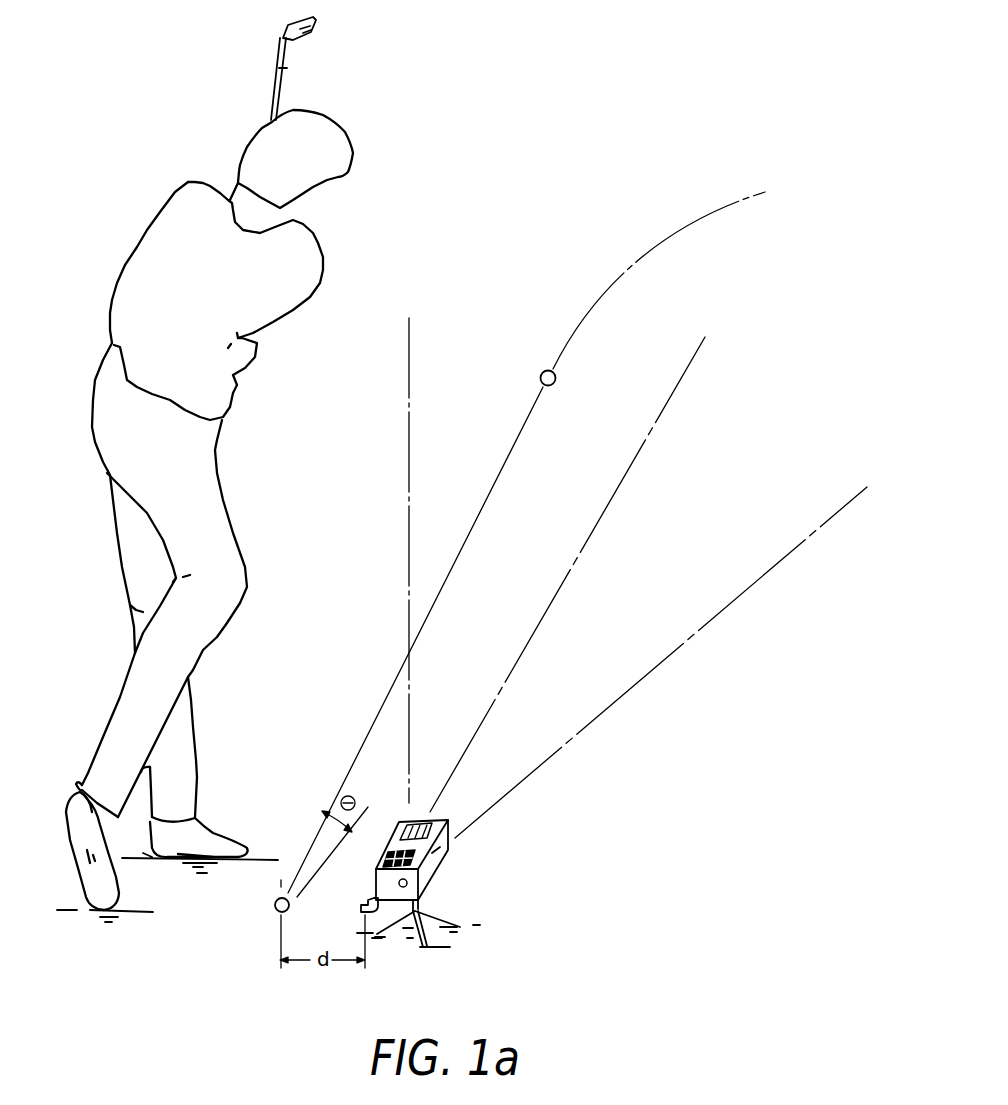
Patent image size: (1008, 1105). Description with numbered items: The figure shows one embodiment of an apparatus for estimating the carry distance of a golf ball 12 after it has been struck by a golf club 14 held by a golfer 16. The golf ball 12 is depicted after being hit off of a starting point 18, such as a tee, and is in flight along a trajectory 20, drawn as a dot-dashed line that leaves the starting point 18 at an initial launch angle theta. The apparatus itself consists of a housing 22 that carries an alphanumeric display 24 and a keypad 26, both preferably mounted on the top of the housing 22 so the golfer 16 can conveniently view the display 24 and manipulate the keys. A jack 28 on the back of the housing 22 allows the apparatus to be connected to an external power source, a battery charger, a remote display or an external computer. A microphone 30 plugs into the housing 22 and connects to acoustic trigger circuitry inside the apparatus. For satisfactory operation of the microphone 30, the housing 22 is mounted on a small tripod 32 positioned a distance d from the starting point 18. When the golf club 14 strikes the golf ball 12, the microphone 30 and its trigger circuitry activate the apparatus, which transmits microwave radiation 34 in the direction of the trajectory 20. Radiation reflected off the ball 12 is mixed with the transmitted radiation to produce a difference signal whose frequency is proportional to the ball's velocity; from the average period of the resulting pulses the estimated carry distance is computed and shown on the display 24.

The golf ball 12 is at (557, 376).
The golf club 14 is at (316, 21).
The golfer 16 is at (163, 218).
The starting point 18 is at (273, 903).
The trajectory 20 is at (690, 219).
The housing 22 is at (438, 860).
The alphanumeric display 24 is at (420, 818).
The keypad 26 is at (448, 845).
The jack 28 is at (407, 883).
The microphone 30 is at (361, 906).
The tripod 32 is at (425, 947).
The microwave radiation 34 is at (712, 472).